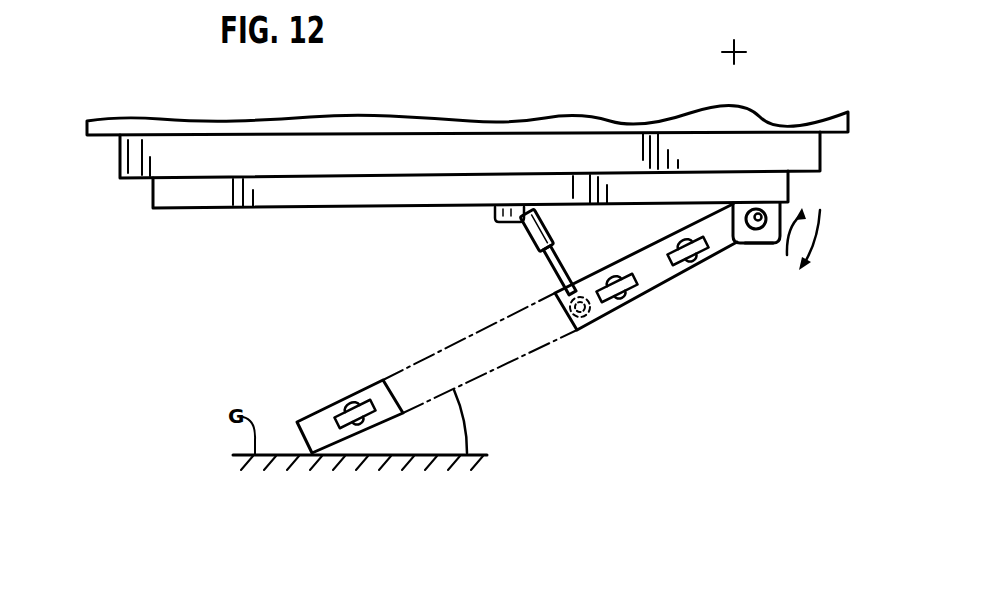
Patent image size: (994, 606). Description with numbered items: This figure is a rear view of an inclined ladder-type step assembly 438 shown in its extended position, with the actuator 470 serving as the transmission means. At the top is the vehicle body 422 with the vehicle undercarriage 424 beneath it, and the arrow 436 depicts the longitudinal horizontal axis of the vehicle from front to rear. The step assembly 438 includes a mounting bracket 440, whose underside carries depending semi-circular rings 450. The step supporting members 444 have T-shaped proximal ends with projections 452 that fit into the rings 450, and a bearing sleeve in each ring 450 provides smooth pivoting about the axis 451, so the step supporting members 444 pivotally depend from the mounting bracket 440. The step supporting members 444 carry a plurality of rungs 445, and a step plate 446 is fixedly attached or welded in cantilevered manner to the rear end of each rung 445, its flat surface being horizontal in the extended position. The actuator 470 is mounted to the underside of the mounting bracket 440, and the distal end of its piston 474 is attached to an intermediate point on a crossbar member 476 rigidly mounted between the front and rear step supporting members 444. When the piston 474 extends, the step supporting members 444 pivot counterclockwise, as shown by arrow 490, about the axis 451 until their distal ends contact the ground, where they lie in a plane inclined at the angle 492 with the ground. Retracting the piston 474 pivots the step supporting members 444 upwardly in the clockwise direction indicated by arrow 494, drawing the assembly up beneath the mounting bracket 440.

The vehicle body 422 is at (598, 118).
The vehicle undercarriage 424 is at (118, 160).
The mounting bracket 440 is at (152, 203).
The longitudinal horizontal axis 436 is at (738, 49).
The step assembly 438 is at (266, 281).
The step supporting members 444 is at (655, 286).
The rungs 445 is at (687, 262).
The step plate 446 is at (669, 246).
The semi-circular rings 450 is at (782, 213).
The pivot axis 451 is at (754, 208).
The projections 452 is at (764, 246).
The actuator 470 is at (524, 232).
The actuator piston 474 is at (548, 272).
The crossbar member 476 is at (587, 323).
The counterclockwise direction arrow 490 is at (822, 229).
The clockwise direction arrow 494 is at (815, 260).
The angle of inclination 492 is at (468, 427).